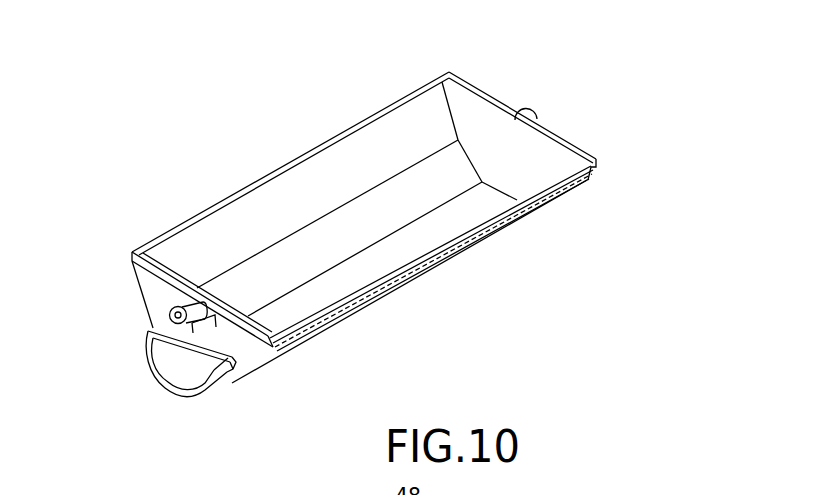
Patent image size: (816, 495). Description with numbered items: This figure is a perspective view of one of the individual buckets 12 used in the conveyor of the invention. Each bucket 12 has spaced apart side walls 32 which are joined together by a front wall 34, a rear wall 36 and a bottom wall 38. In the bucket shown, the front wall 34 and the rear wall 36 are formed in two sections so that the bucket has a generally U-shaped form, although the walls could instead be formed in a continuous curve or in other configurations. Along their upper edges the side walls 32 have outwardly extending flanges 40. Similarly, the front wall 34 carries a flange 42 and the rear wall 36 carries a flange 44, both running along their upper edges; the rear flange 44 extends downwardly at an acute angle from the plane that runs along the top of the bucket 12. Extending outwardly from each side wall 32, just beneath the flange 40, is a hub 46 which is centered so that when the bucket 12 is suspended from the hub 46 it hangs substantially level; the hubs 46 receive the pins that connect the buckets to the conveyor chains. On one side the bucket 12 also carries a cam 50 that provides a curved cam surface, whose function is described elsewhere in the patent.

The bucket 12 is at (553, 238).
The side wall 32 is at (517, 158).
The front wall 34 is at (363, 307).
The rear wall 36 is at (323, 183).
The bottom wall 38 is at (390, 274).
The flange 40 is at (565, 141).
The flange 42 is at (458, 247).
The flange 44 is at (380, 107).
The hub 46 is at (524, 105).
The cam 50 is at (198, 400).